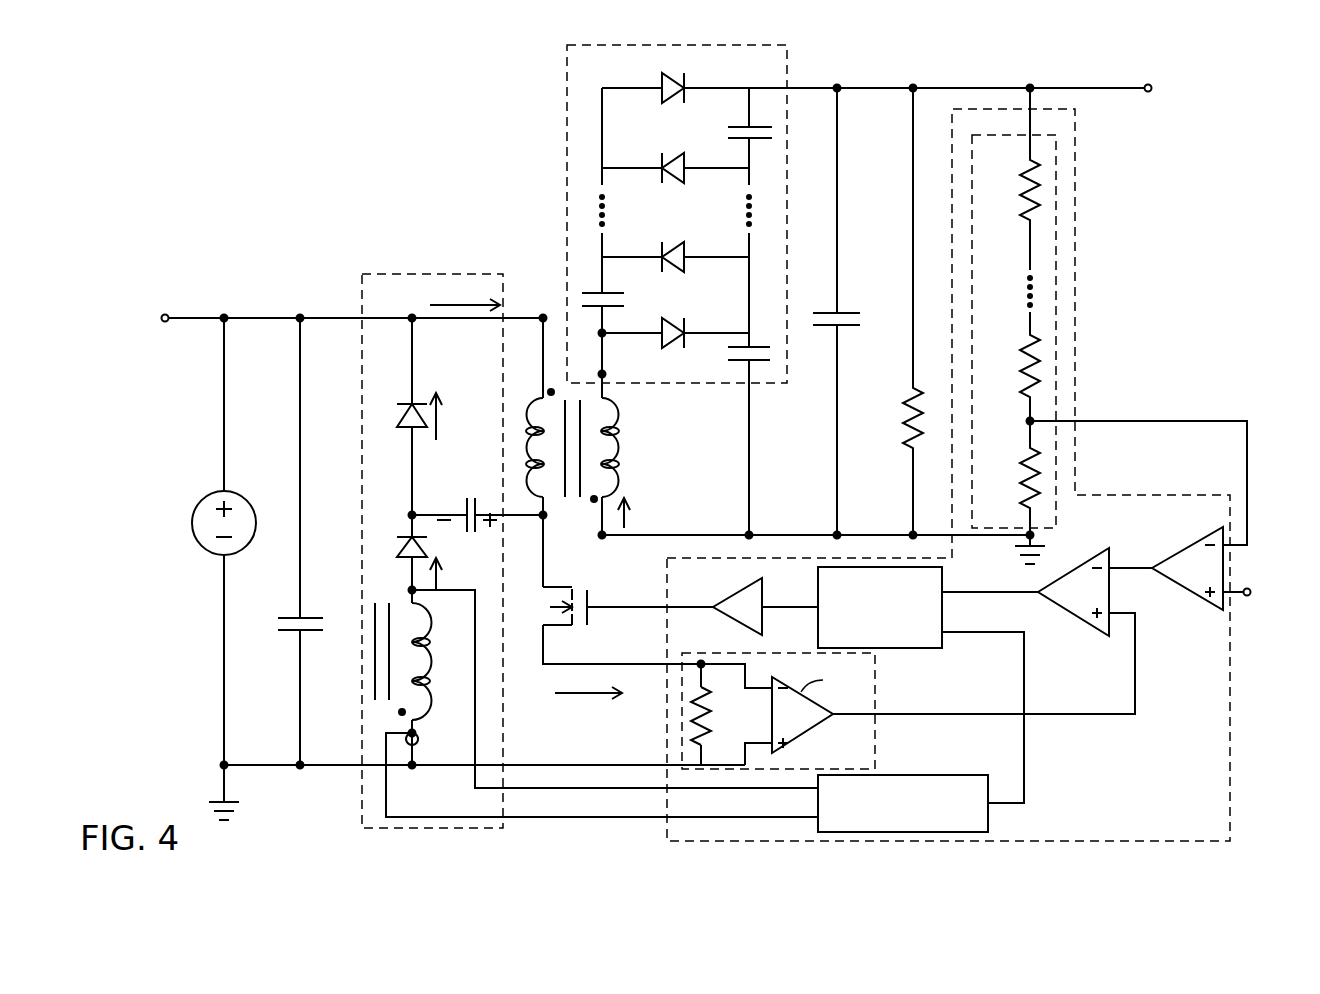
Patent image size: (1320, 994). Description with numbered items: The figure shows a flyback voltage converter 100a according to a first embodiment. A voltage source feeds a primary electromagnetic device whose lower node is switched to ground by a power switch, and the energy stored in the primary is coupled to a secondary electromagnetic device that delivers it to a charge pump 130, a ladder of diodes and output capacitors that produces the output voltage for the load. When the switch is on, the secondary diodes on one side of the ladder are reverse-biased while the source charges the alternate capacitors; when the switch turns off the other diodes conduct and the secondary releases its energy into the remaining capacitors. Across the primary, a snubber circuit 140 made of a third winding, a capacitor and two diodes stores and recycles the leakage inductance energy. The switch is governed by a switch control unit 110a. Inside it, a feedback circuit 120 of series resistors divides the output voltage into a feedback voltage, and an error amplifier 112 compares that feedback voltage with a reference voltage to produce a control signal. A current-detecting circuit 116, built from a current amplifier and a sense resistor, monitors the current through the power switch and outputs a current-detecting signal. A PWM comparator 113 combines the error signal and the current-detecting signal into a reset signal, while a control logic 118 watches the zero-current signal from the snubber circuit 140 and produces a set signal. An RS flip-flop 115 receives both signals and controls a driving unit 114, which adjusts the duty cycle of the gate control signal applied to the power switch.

The flyback voltage converter 100a is at (312, 148).
The switch control unit 110a is at (1230, 684).
The error amplifier 112 is at (1182, 592).
The PWM comparator 113 is at (1071, 616).
The driving unit 114 is at (738, 590).
The flip-flop 115 is at (919, 648).
The current-detecting circuit 116 is at (681, 725).
The control logic 118 is at (905, 775).
The feedback circuit 120 is at (1056, 333).
The charge pump 130 is at (567, 158).
The snubber circuit 140 is at (432, 274).